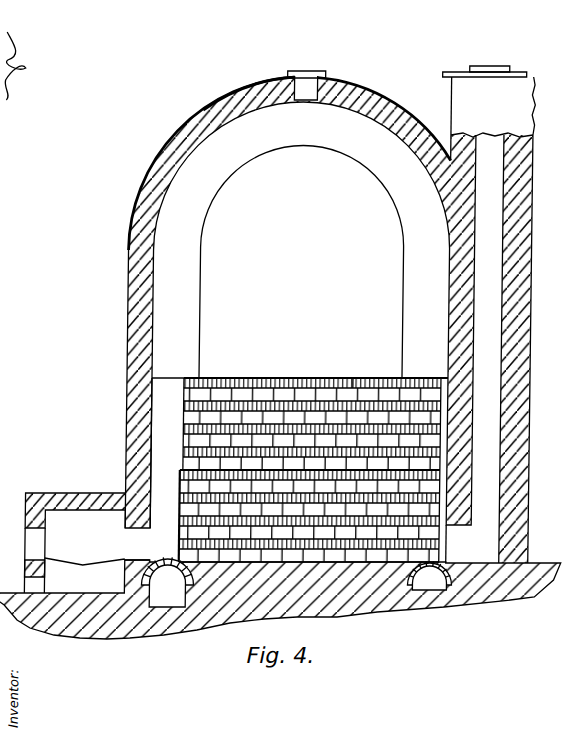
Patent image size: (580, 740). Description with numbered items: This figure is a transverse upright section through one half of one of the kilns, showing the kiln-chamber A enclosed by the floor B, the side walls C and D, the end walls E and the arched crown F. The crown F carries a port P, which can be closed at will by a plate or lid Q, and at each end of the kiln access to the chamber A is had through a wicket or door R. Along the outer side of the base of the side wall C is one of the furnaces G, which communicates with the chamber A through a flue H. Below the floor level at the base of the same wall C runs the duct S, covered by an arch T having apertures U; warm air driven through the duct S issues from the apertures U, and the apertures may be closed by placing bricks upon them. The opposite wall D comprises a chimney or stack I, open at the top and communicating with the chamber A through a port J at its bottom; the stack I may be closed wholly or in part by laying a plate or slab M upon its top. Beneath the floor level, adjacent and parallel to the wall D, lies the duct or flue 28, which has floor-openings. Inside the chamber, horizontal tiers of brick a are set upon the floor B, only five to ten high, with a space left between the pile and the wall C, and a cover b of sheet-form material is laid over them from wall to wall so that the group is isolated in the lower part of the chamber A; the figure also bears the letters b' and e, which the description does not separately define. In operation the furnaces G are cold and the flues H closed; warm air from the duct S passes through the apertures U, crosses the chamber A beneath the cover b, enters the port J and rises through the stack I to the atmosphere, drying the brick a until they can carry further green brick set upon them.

The end wall E is at (301, 302).
The arched crown F is at (341, 93).
The port P is at (311, 93).
The plate or lid Q is at (296, 70).
The side wall C is at (128, 376).
The side wall D is at (448, 326).
The plate or slab M is at (492, 66).
The chimney or stack I is at (520, 278).
The port J is at (457, 543).
The wicket or door R is at (302, 261).
The kiln-chamber A is at (299, 281).
The floor plate e is at (160, 379).
The cover b is at (314, 456).
The brick joint b' is at (352, 369).
The brick a is at (193, 490).
The furnace G is at (40, 512).
The flue H is at (139, 543).
The aperture U is at (160, 560).
The arch T is at (176, 562).
The duct S is at (167, 582).
The duct or flue 28 is at (429, 576).
The floor B is at (386, 586).